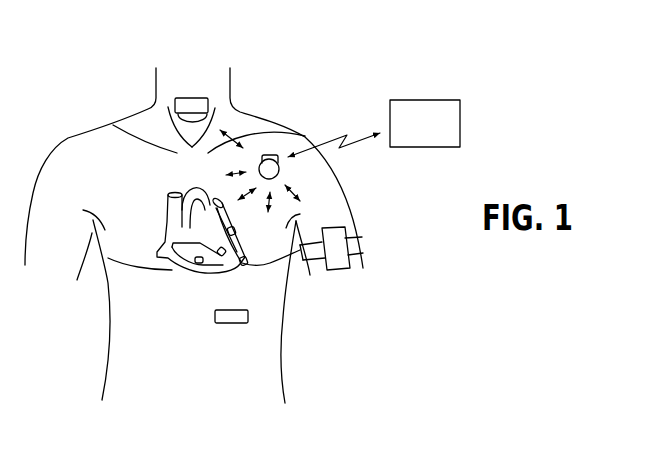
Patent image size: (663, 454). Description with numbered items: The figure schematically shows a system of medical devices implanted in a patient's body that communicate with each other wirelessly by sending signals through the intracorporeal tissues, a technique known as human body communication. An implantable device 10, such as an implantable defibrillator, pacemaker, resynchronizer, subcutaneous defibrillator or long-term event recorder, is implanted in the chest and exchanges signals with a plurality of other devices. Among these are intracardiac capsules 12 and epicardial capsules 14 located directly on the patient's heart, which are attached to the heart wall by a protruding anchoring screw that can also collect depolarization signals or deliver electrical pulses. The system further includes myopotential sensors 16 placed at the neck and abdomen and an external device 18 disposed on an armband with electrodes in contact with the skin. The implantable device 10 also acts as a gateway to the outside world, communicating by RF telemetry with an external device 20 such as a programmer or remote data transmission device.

The implantable device 10 is at (266, 168).
The intracardiac capsules 12 is at (197, 268).
The epicardial capsules 14 is at (263, 265).
The myopotential sensors 16 is at (202, 98).
The external device 18 is at (342, 247).
The external device 20 is at (422, 115).